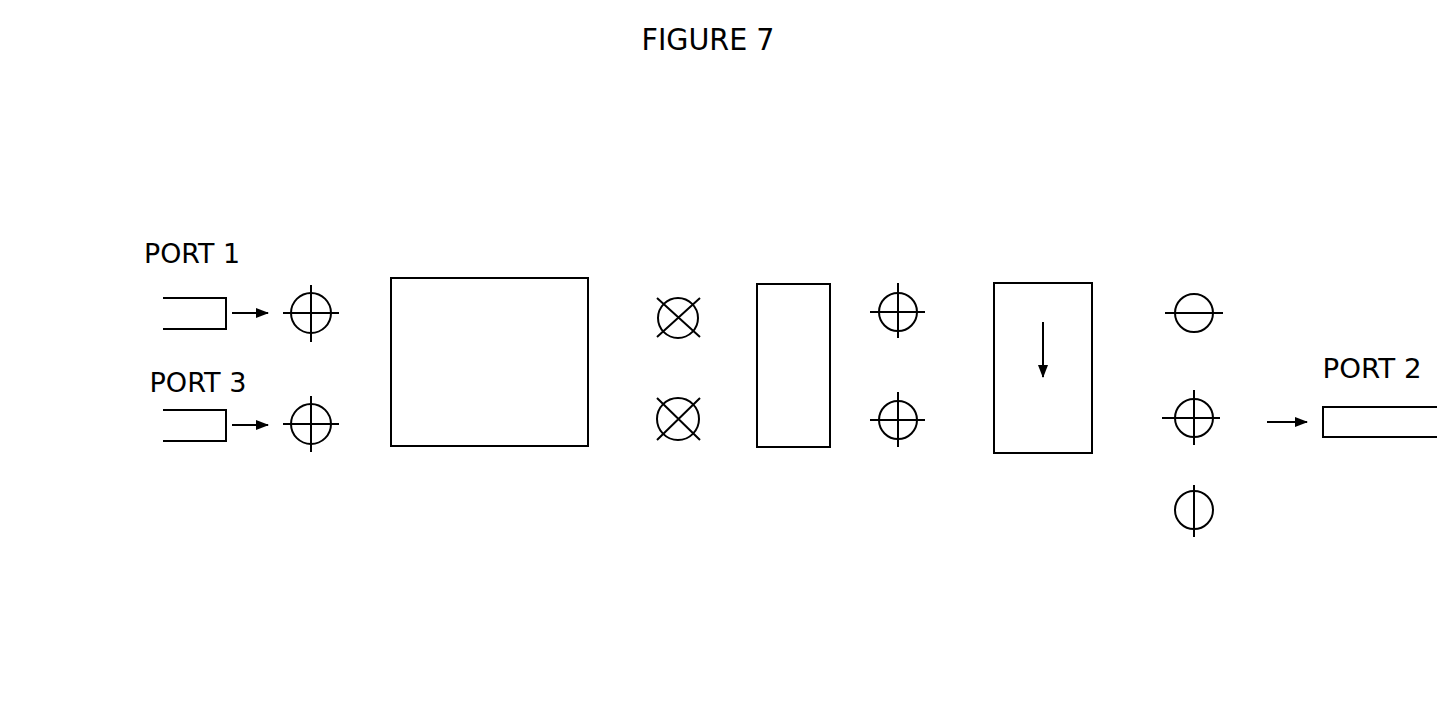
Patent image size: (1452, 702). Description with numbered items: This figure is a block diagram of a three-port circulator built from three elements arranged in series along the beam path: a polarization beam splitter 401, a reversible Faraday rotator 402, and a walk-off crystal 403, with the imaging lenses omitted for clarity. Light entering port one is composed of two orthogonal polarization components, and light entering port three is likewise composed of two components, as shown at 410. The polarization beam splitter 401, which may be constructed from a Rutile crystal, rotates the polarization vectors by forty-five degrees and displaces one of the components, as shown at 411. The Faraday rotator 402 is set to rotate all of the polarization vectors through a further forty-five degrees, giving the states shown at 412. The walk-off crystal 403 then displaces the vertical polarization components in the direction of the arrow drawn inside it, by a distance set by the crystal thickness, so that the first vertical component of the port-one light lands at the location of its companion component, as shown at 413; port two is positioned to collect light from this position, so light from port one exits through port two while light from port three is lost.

The polarization beam splitter 401 is at (505, 403).
The reversible Faraday rotator 402 is at (805, 284).
The walk-off crystal 403 is at (1048, 281).
The polarization states at input 410 is at (311, 233).
The polarization states after beam splitter 411 is at (684, 465).
The polarization states after Faraday rotator 412 is at (901, 467).
The polarization states at output 413 is at (1201, 562).